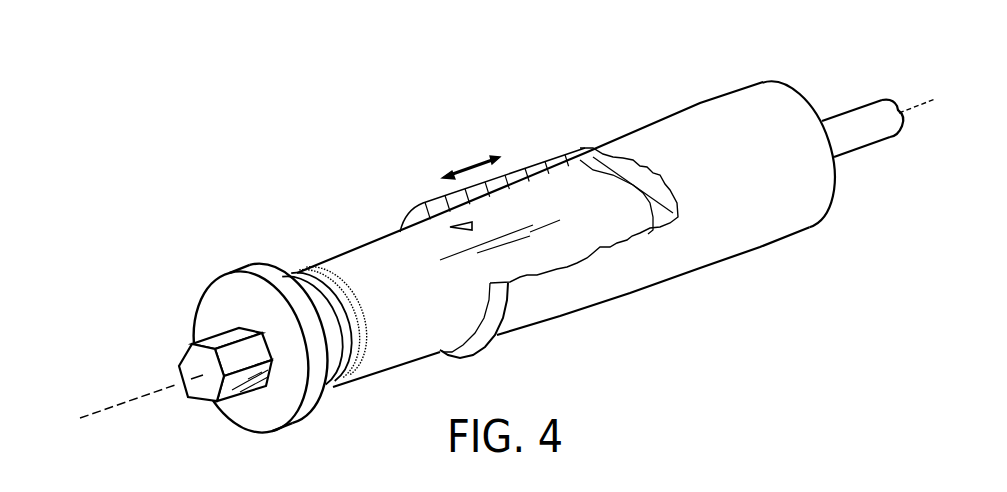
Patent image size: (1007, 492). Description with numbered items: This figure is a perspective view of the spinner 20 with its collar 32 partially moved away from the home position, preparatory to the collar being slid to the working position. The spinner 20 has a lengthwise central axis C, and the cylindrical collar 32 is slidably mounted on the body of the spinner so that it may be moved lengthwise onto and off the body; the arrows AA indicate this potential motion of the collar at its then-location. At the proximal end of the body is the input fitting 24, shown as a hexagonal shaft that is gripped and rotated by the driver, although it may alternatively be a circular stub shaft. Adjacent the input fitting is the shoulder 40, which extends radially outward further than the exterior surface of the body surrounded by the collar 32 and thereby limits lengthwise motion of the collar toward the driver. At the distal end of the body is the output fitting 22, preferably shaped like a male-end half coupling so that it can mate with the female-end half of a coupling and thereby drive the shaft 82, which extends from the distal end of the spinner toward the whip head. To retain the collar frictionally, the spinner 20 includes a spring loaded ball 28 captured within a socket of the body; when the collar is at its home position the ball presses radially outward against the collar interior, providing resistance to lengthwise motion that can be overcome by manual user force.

The spinner 20 is at (556, 62).
The output fitting 22 is at (650, 208).
The input fitting 24 is at (180, 358).
The spring loaded ball 28 is at (472, 227).
The collar 32 is at (728, 108).
The shoulder 40 is at (253, 270).
The shaft 82 is at (859, 103).
The arrows AA is at (468, 165).
The central axis C is at (143, 393).